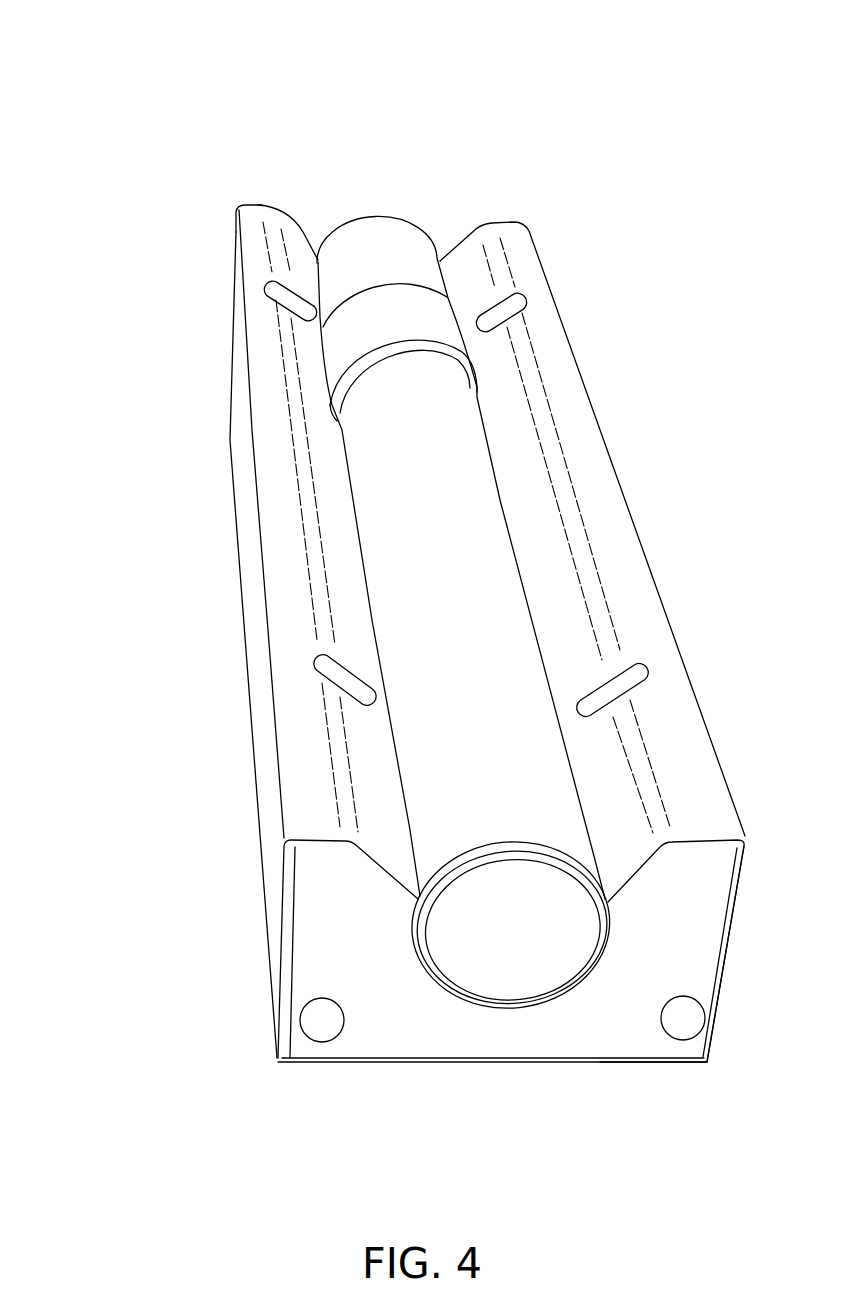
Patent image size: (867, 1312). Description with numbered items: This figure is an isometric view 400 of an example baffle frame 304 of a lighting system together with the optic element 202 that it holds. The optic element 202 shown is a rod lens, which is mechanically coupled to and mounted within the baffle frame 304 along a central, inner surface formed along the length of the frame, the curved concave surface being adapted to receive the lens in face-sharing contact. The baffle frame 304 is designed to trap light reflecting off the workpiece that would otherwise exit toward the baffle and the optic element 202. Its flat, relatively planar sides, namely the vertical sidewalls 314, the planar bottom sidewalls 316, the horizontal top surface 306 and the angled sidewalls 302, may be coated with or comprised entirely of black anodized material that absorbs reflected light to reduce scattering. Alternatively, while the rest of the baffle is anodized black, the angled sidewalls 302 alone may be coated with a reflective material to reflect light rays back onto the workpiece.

The mounting assembly 400 is at (441, 601).
The angled sidewalls 302 is at (305, 237).
The planar bottom sidewalls 316 is at (245, 190).
The vertical sidewalls 314 is at (250, 638).
The baffle frame 304 is at (380, 1102).
The horizontal top surface 306 is at (655, 1080).
The optic element 202 is at (517, 970).